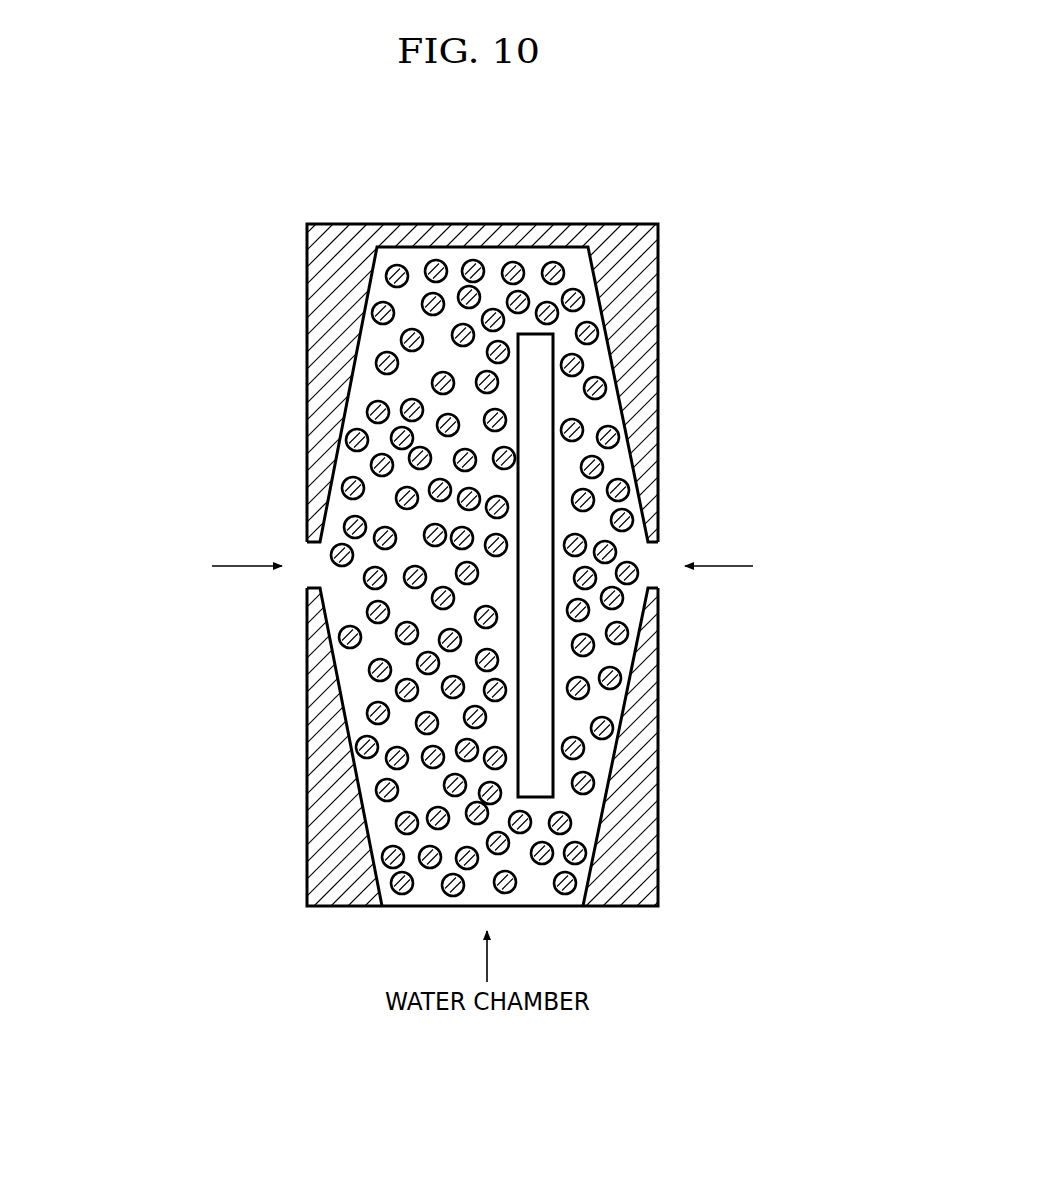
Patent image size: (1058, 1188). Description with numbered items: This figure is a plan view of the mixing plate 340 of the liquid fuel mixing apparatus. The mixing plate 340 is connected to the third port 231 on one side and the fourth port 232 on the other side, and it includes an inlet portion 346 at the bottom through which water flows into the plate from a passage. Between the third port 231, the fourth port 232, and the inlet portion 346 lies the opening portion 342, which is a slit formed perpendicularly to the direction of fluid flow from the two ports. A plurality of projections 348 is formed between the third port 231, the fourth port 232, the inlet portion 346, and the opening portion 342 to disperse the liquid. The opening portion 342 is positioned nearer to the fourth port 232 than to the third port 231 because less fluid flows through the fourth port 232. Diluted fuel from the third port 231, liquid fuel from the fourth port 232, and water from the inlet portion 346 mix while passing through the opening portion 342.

The mixing plate 340 is at (726, 255).
The opening portion 342 is at (542, 395).
The inlet portion 346 is at (530, 895).
The projections 348 is at (607, 438).
The third port 231 is at (169, 565).
The fourth port 232 is at (808, 565).